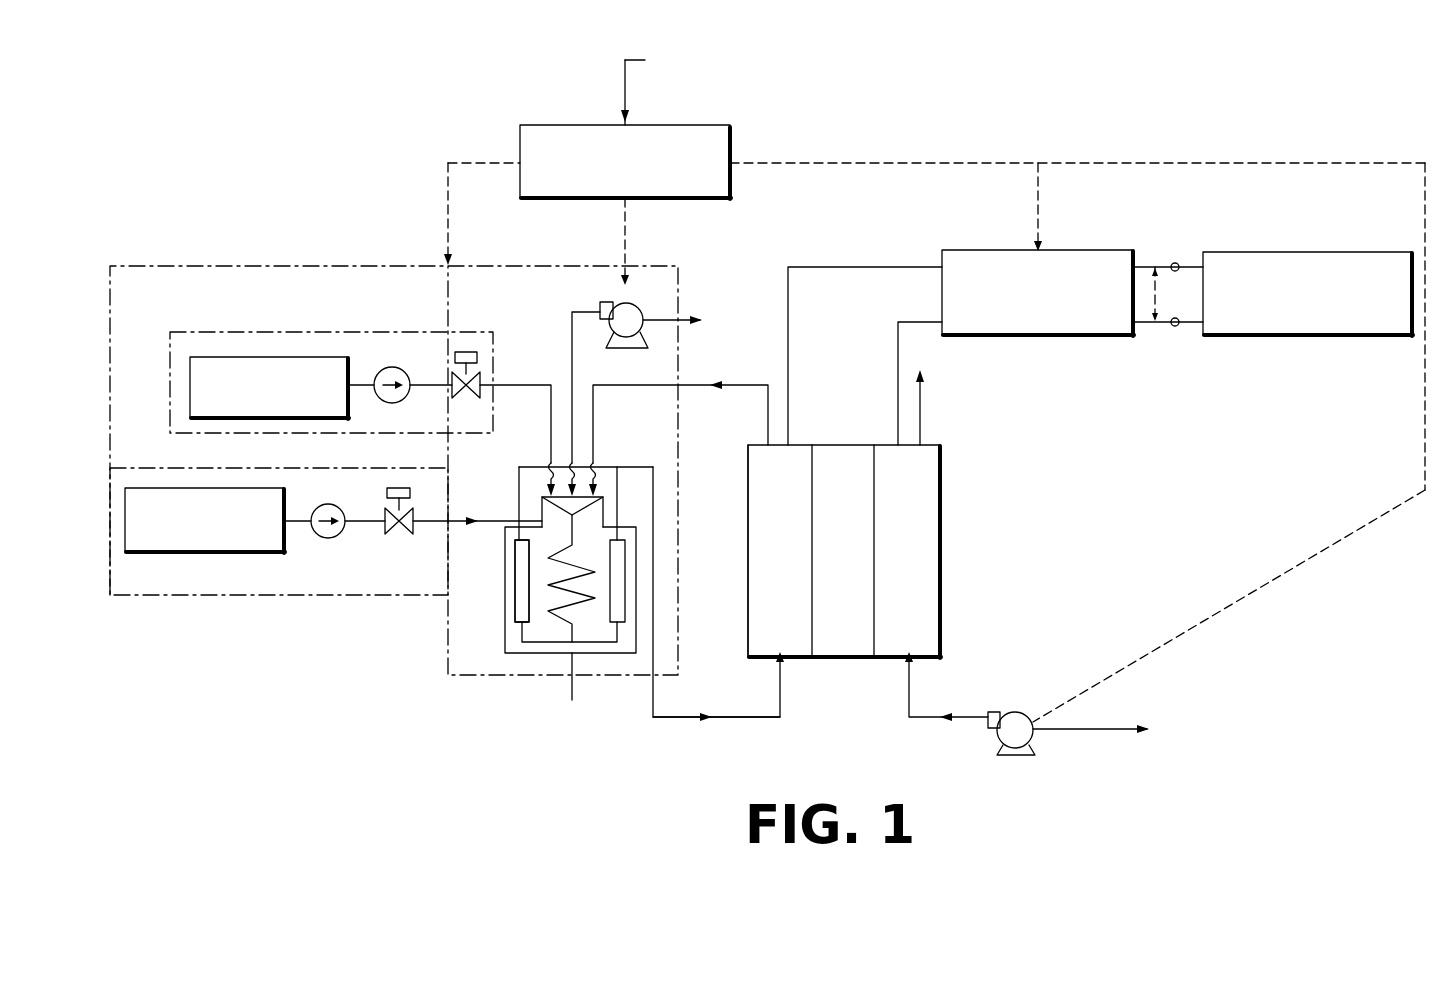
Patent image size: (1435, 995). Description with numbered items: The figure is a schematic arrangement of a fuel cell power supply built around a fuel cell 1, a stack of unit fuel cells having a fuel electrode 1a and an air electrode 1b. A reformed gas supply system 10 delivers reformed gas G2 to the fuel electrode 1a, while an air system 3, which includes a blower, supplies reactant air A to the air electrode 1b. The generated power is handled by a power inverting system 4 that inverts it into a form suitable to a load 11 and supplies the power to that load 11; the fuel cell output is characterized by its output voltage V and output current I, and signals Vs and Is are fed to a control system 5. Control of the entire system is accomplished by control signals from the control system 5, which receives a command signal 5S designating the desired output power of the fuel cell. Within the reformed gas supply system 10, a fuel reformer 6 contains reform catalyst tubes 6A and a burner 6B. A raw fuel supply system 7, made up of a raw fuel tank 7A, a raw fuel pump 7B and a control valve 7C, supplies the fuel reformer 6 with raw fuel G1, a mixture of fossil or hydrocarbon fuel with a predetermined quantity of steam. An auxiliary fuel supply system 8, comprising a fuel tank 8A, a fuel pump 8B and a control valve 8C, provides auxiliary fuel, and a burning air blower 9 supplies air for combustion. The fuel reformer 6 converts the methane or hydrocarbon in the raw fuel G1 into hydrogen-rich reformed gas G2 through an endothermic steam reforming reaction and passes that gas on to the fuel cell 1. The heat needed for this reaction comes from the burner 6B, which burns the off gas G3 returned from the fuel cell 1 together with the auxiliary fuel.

The fuel cell 1 is at (950, 528).
The fuel electrode 1a is at (748, 618).
The air electrode 1b is at (940, 593).
The air system 3 is at (1035, 742).
The power inverting system 4 is at (1022, 337).
The control system 5 is at (548, 200).
The command signal 5S is at (628, 75).
The fuel reformer 6 is at (528, 655).
The reform catalyst tubes 6A is at (518, 593).
The burner 6B is at (598, 508).
The raw fuel supply system 7 is at (442, 597).
The raw fuel tank 7A is at (172, 553).
The raw fuel pump 7B is at (325, 540).
The control valve 7C is at (405, 486).
The auxiliary fuel supply system 8 is at (195, 330).
The fuel tank 8A is at (190, 390).
The fuel pump 8B is at (390, 367).
The control valve 8C is at (466, 350).
The burning air blower 9 is at (650, 298).
The reformed gas supply system 10 is at (447, 650).
The load 11 is at (1290, 250).
The raw fuel G1 is at (470, 523).
The reformed gas G2 is at (726, 692).
The off gas G3 is at (714, 384).
The reactant air A is at (943, 716).
The output current I is at (1163, 266).
The output voltage V is at (1167, 297).
The voltage signal Vs is at (625, 94).
The current signal Is is at (628, 92).